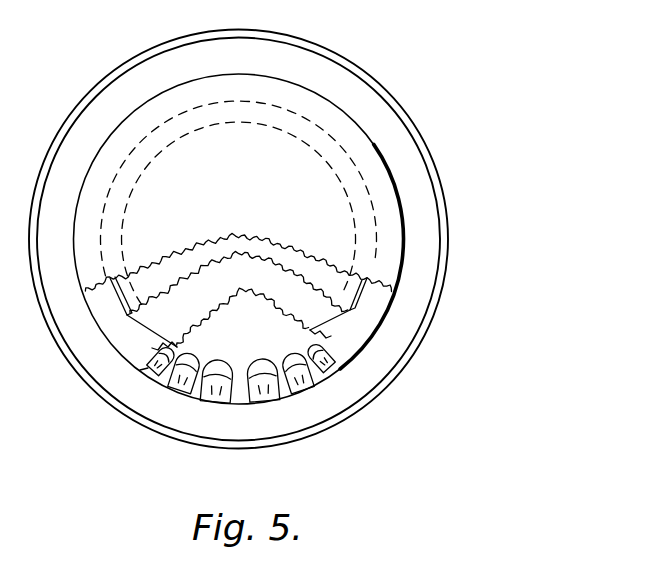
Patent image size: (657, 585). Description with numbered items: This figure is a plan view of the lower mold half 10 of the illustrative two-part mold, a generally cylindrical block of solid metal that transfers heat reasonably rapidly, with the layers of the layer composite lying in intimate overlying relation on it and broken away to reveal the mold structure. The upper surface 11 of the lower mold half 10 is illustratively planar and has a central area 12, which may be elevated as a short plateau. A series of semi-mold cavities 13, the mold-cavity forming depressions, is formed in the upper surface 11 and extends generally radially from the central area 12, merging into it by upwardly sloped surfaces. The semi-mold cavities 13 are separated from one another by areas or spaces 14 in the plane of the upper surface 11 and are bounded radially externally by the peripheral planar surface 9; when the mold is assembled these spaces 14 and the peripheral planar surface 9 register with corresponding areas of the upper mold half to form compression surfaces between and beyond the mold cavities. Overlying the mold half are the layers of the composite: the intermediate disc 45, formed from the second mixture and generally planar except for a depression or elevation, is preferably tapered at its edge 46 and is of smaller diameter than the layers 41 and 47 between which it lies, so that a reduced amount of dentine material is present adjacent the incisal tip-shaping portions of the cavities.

The peripheral planar surface 9 is at (380, 370).
The lower mold half 10 is at (430, 325).
The upper surface 11 is at (235, 329).
The central area 12 is at (243, 277).
The semi-mold cavities 13 is at (267, 398).
The areas or spaces 14 is at (240, 393).
The layer 41 is at (365, 332).
The intermediate disc 45 is at (355, 305).
The tapered edge 46 is at (126, 317).
The layer 47 is at (380, 290).